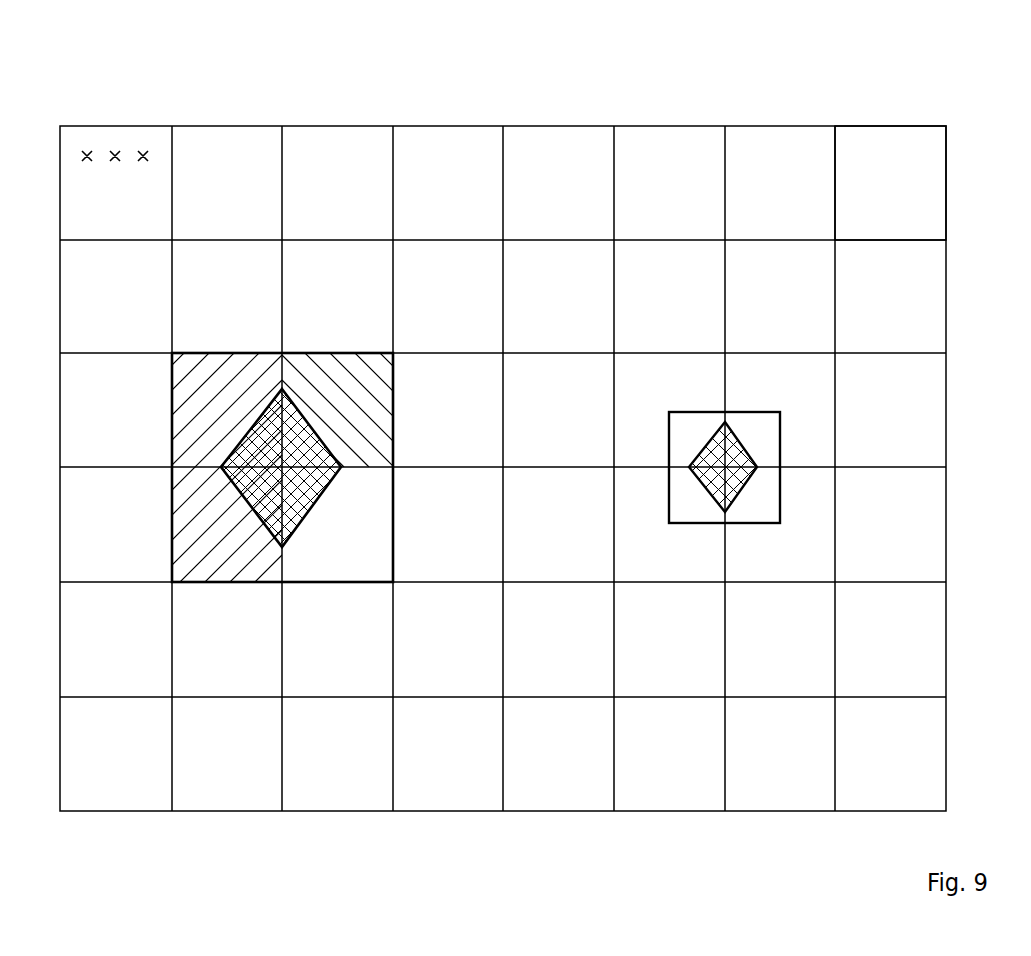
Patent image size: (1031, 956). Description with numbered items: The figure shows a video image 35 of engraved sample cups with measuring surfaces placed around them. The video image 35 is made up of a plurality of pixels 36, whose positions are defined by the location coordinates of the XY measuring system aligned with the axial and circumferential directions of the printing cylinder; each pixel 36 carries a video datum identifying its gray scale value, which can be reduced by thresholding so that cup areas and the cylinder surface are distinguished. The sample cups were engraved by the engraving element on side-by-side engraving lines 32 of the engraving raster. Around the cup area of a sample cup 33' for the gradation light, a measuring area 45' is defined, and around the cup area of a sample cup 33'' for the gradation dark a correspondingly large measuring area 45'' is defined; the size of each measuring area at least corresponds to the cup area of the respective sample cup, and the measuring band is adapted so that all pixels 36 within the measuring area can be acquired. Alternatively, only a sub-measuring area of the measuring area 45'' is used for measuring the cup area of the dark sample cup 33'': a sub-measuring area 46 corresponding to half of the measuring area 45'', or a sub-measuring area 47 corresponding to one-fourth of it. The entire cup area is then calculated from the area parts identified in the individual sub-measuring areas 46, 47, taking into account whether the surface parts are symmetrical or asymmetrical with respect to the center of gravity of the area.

The engraving lines 32 is at (946, 163).
The video image 35 is at (946, 188).
The pixels 36 is at (143, 150).
The measuring area 45' is at (744, 439).
The measuring area 45'' is at (319, 467).
The sample cup 33' is at (740, 493).
The sample cup 33'' is at (289, 471).
The sub-measuring area 46 is at (187, 453).
The sub-measuring area 47 is at (317, 370).